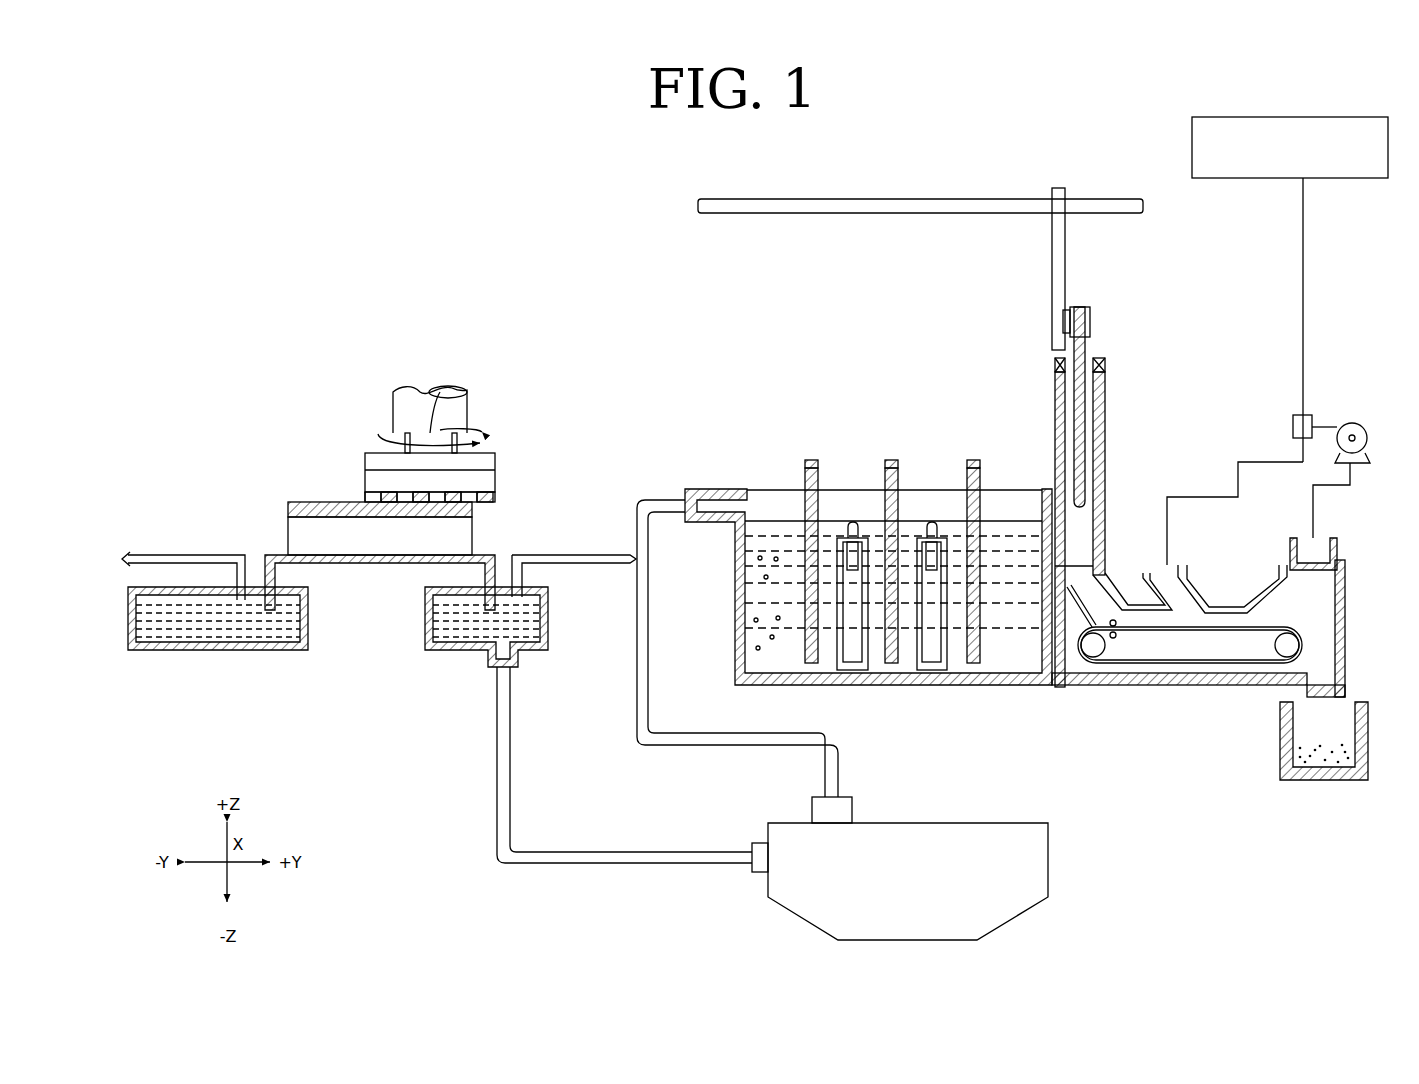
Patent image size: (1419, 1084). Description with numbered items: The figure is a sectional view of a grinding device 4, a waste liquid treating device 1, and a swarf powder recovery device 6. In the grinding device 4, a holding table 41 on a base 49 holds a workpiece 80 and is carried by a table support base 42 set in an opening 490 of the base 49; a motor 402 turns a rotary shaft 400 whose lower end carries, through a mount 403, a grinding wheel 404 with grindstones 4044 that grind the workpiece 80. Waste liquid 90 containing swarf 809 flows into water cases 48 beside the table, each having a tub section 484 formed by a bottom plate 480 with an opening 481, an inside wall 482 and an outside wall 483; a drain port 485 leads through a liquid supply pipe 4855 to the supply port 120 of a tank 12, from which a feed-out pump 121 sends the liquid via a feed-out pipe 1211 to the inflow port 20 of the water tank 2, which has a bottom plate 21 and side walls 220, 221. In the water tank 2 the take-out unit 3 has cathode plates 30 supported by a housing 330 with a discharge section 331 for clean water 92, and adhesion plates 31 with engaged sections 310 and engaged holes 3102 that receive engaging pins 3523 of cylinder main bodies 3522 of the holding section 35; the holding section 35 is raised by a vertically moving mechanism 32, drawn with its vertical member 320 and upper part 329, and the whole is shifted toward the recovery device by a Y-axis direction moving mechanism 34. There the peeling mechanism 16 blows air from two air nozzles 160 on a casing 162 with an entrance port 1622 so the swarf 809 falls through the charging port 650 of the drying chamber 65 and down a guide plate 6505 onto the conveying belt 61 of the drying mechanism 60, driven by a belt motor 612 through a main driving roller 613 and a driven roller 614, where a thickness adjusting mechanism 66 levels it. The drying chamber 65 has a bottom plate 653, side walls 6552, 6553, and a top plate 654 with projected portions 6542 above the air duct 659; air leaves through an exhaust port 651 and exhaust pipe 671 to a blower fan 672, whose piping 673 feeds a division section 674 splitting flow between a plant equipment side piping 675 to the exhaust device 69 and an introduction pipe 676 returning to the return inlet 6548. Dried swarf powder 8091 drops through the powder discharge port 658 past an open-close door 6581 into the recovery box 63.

The waste liquid treating device 1 is at (785, 378).
The water tank 2 is at (890, 700).
The take-out unit 3 is at (945, 275).
The grinding device 4 is at (307, 350).
The swarf powder recovery device 6 is at (1217, 460).
The tank 12 is at (1062, 855).
The peeling mechanism 16 is at (1115, 368).
The inflow port 20 is at (690, 488).
The bottom plate 21 is at (887, 686).
The cathode plate 30 is at (852, 675).
The adhesion plate 31 is at (810, 458).
The vertically moving mechanism 32 is at (1140, 228).
The Y-axis direction moving mechanism 34 is at (812, 215).
The holding section 35 is at (1100, 296).
The holding table 41 is at (293, 535).
The table support base 42 is at (372, 566).
The water case 48 is at (168, 655).
The base 49 is at (162, 555).
The drying mechanism 60 is at (1200, 545).
The conveying belt 61 is at (1120, 680).
The recovery box 63 is at (1310, 782).
The drying chamber 65 is at (1140, 702).
The thickness adjusting mechanism 66 is at (1150, 690).
The exhaust device 69 is at (1192, 150).
The workpiece 80 is at (485, 498).
The waste liquid 90 is at (280, 600).
The clean water 92 is at (740, 680).
The supply port 120 is at (752, 865).
The feed-out pump 121 is at (852, 810).
The air nozzle 160 is at (1055, 365).
The casing 162 is at (1055, 428).
The side wall 220 is at (773, 500).
The side wall 221 is at (737, 612).
The engaged section 310 is at (890, 458).
The electrode support rod 320 is at (1055, 285).
The rod end 329 is at (1052, 318).
The housing 330 is at (810, 665).
The discharge section 331 is at (930, 525).
The rotary shaft 400 is at (440, 392).
The motor 402 is at (467, 420).
The mount 403 is at (372, 455).
The grinding wheel 404 is at (362, 478).
The bottom plate 480 is at (278, 655).
The opening 481 is at (390, 615).
The inside wall 482 is at (305, 645).
The outside wall 483 is at (130, 645).
The tub section 484 is at (240, 652).
The drain port 485 is at (512, 700).
The opening 490 is at (520, 555).
The belt motor 612 is at (1080, 688).
The main driving roller 613 is at (1103, 692).
The driven roller 614 is at (1290, 655).
The charging port 650 is at (1045, 520).
The exhaust port 651 is at (1317, 573).
The bottom plate 653 is at (1205, 692).
The top plate 654 is at (1258, 592).
The powder discharge port 658 is at (1310, 705).
The air duct 659 is at (1235, 670).
The exhaust pipe 671 is at (1270, 462).
The blower fan 672 is at (1350, 423).
The piping 673 is at (1303, 410).
The division section 674 is at (1293, 420).
The plant equipment side piping 675 is at (1303, 278).
The introduction pipe 676 is at (1200, 496).
The swarf 809 is at (745, 577).
The feed-out pipe 1211 is at (692, 745).
The entrance port 1622 is at (1063, 345).
The engaged hole 3102 is at (898, 458).
The cylinder main body 3522 is at (1080, 307).
The engaging pin 3523 is at (1090, 312).
The grindstone 4044 is at (365, 497).
The liquid supply pipe 4855 is at (592, 865).
The guide plate 6505 is at (1115, 592).
The projected portion 6542 is at (1225, 607).
The return inlet 6548 is at (1125, 560).
The side wall 6552 is at (1058, 700).
The side wall 6553 is at (1335, 560).
The open-close door 6581 is at (1300, 690).
The swarf powder 8091 is at (1330, 782).